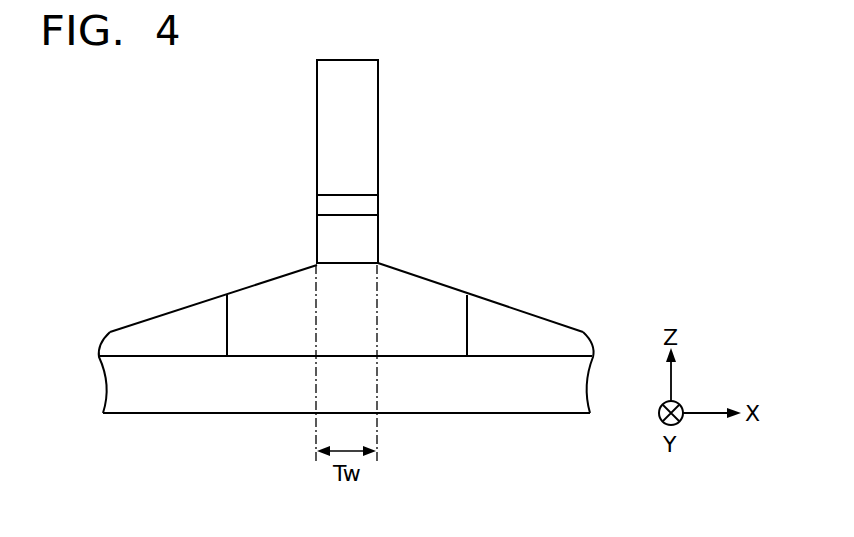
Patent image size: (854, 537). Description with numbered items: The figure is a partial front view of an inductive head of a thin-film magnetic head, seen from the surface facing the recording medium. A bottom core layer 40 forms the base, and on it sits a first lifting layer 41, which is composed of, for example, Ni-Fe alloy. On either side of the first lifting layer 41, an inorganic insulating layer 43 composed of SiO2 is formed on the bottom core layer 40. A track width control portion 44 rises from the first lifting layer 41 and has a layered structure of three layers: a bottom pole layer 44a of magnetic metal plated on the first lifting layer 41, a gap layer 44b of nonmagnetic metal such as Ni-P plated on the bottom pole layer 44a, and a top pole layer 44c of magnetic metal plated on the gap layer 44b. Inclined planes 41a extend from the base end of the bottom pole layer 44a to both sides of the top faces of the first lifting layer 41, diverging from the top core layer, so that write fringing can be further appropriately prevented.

The bottom core layer 40 is at (553, 377).
The first lifting layer 41 is at (437, 337).
The inclined planes 41a is at (270, 282).
The inorganic insulating layer 43 is at (178, 335).
The track width control portion 44 is at (458, 126).
The bottom pole layer 44a is at (362, 232).
The gap layer 44b is at (370, 205).
The top pole layer 44c is at (358, 160).